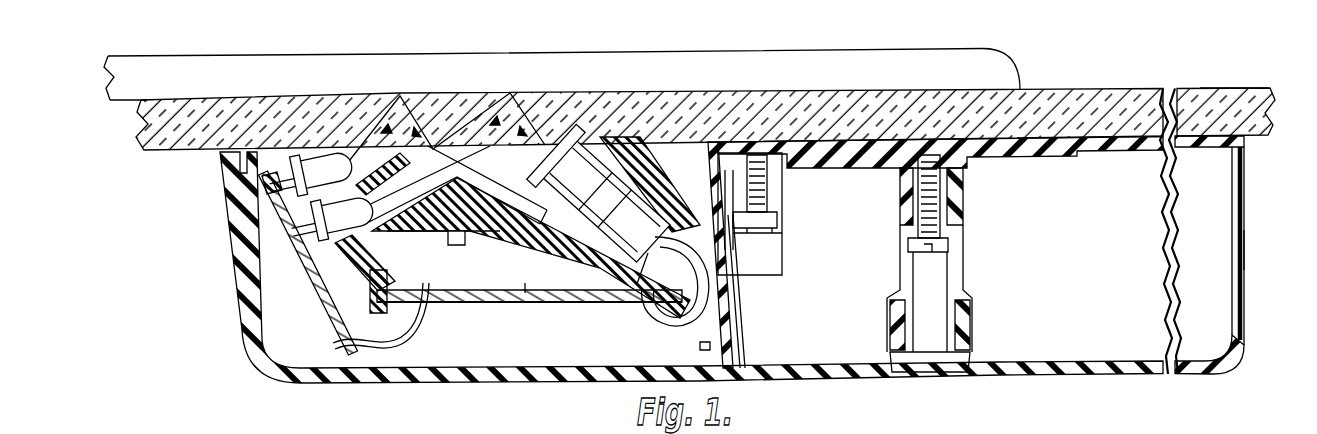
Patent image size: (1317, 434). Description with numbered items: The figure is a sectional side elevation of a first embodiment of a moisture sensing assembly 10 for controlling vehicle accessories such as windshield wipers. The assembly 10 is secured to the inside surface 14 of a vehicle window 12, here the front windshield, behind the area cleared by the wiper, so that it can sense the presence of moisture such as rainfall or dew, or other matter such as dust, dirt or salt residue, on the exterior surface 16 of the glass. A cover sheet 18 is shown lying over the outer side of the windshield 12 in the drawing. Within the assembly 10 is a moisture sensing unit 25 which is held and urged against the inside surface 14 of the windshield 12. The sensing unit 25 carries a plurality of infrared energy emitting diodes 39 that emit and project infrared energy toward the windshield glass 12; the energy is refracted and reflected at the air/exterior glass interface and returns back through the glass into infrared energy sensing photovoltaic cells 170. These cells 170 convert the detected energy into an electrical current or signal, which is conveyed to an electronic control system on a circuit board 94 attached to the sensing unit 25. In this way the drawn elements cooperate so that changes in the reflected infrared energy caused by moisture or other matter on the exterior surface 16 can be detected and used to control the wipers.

The moisture sensing assembly 10 is at (1292, 249).
The vehicle window 12 is at (1118, 87).
The inside surface 14 is at (1248, 147).
The exterior surface 16 is at (1250, 89).
The cover sheet 18 is at (1018, 74).
The moisture sensing unit 25 is at (484, 232).
The infrared energy emitting diodes 39 is at (333, 158).
The circuit board 94 is at (511, 303).
The infrared energy sensing photovoltaic cells 170 is at (697, 206).